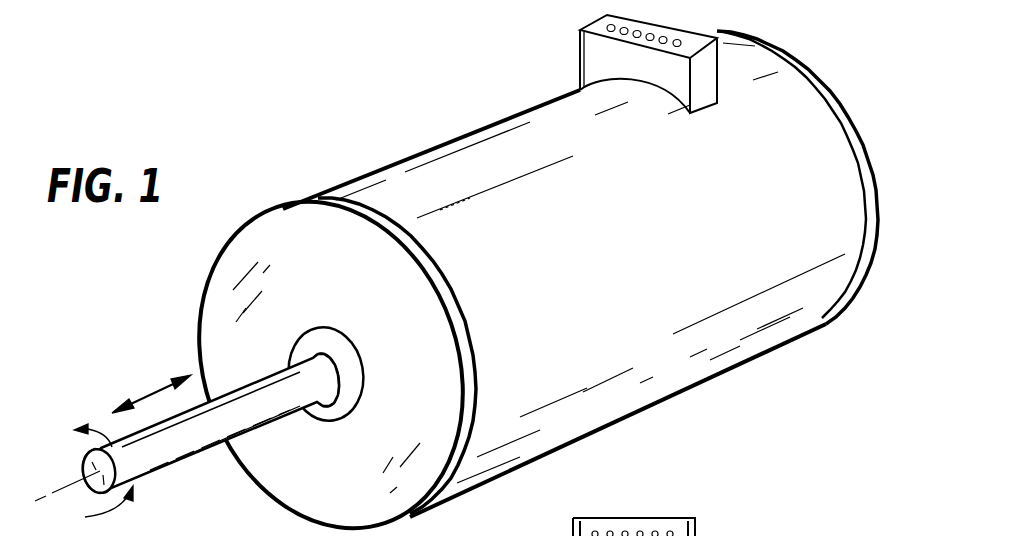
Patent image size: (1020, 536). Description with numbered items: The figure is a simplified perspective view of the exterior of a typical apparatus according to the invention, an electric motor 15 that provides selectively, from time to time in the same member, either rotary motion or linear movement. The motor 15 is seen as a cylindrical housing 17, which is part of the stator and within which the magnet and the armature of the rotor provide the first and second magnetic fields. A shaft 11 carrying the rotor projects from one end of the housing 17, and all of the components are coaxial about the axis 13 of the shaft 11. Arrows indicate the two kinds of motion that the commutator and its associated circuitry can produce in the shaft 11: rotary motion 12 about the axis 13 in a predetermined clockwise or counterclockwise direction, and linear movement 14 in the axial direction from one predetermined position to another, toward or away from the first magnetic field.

The shaft 11 is at (180, 447).
The rotary motion 12 is at (85, 517).
The axis 13 is at (73, 477).
The linear movement 14 is at (153, 393).
The electric motor 15 is at (425, 130).
The housing 17 is at (638, 269).